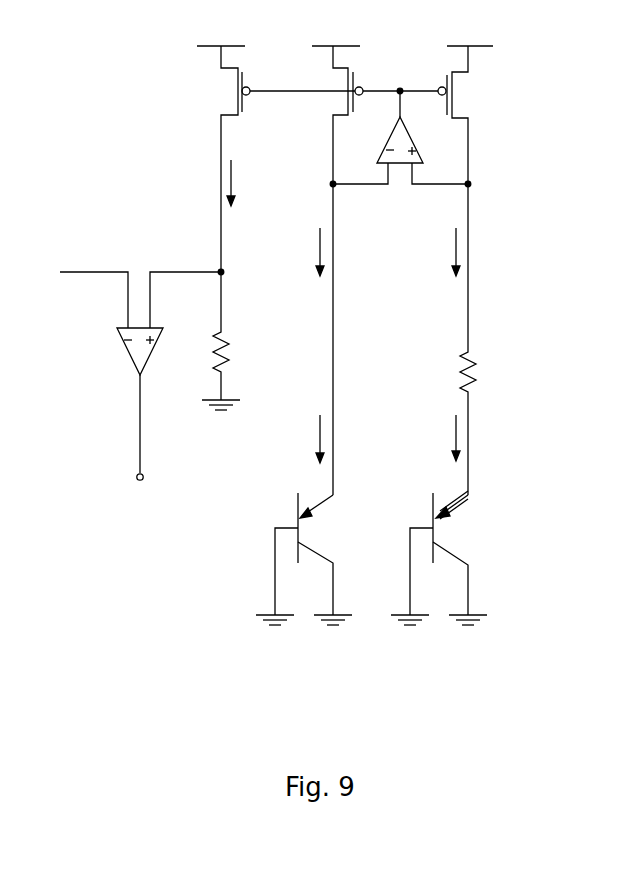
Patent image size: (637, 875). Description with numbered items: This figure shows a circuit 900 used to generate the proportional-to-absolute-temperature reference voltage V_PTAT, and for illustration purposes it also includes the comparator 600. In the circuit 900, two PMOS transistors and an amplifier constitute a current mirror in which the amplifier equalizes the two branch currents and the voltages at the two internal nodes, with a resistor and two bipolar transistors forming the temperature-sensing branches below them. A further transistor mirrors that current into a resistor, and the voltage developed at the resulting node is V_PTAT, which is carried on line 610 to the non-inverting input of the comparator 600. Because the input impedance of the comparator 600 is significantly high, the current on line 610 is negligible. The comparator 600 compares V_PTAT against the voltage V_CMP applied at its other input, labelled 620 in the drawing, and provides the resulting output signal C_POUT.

The comparator 600 is at (135, 362).
The line 610 is at (150, 326).
The inverting input (Vcmp) 620 is at (128, 312).
The circuit 900 is at (546, 762).